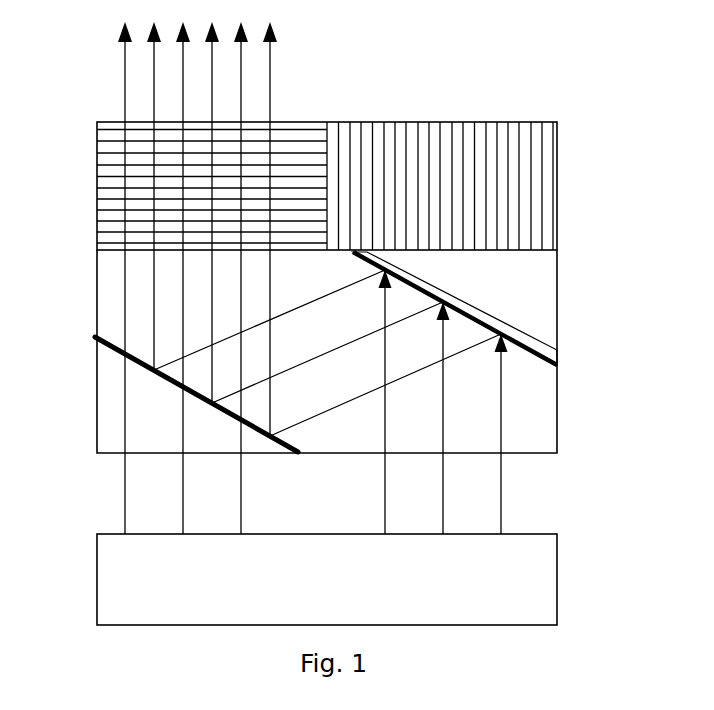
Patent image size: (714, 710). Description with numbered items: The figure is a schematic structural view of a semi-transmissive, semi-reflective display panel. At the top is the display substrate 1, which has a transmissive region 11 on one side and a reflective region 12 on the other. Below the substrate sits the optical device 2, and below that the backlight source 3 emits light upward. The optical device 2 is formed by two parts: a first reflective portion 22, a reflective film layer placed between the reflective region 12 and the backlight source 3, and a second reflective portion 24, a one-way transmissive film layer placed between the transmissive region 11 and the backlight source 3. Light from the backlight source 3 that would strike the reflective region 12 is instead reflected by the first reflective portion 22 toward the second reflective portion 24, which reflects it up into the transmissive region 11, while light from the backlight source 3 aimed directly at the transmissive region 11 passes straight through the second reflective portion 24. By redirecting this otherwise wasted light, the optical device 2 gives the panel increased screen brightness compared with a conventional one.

The display substrate 1 is at (376, 148).
The transmissive region 11 is at (285, 147).
The reflective region 12 is at (408, 145).
The optical device 2 is at (558, 422).
The first reflective portion 22 is at (520, 338).
The second reflective portion 24 is at (110, 350).
The backlight source 3 is at (560, 590).